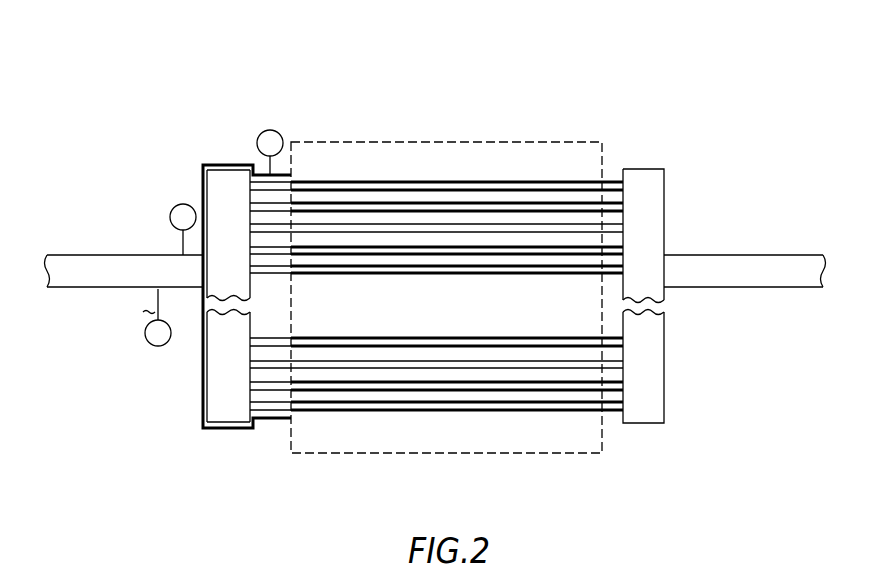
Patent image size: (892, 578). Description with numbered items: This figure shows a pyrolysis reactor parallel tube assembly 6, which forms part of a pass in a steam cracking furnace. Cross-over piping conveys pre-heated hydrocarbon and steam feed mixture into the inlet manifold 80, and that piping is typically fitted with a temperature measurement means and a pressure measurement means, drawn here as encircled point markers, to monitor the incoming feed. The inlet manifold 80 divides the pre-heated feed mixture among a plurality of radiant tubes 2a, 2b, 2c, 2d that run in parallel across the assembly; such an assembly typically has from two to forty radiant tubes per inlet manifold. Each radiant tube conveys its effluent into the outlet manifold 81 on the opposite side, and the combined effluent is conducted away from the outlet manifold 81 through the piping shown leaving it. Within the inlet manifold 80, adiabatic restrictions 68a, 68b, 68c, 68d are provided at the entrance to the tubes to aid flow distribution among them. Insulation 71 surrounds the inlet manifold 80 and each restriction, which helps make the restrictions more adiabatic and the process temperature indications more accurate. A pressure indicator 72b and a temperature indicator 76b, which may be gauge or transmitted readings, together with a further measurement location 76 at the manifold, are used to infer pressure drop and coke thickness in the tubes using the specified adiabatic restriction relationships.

The parallel tube assembly 6 is at (487, 123).
The insulation 71 is at (223, 162).
The fixing point T1 76 is at (258, 133).
The temperature indicator 76b is at (170, 211).
The adiabatic restriction 68a is at (248, 186).
The adiabatic restriction 68b is at (248, 207).
The adiabatic restriction 68c is at (248, 232).
The adiabatic restriction 68d is at (248, 249).
The pressure indicator 72b is at (152, 345).
The inlet manifold 80 is at (225, 410).
The outlet manifold 81 is at (643, 412).
The radiant tube 2a is at (325, 410).
The radiant tube 2b is at (383, 384).
The radiant tube 2c is at (457, 363).
The radiant tube 2d is at (543, 340).